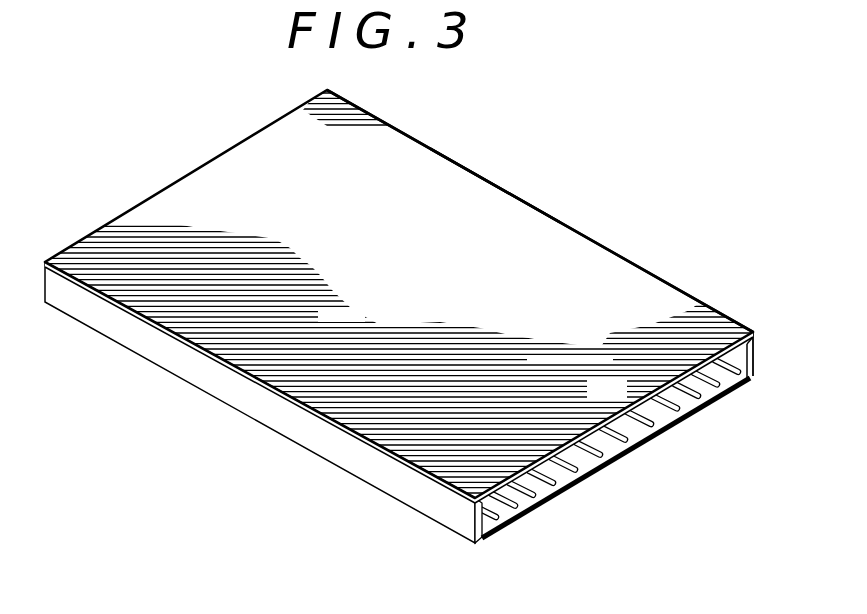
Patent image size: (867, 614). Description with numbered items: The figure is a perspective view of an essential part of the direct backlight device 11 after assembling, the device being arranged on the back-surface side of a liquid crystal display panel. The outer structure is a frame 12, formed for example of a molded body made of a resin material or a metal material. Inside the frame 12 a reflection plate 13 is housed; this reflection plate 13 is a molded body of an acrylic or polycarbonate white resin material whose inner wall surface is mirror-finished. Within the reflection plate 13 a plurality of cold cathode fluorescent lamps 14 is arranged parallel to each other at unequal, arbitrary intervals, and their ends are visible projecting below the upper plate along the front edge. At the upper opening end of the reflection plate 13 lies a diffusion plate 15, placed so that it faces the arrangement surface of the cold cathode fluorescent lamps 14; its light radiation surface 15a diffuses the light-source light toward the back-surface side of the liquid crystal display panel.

The backlight device 11 is at (442, 138).
The frame 12 is at (703, 410).
The reflection plate 13 is at (645, 430).
The cold cathode fluorescent lamps 14 is at (548, 487).
The diffusion plate 15 is at (602, 250).
The light radiation surface 15a is at (503, 194).